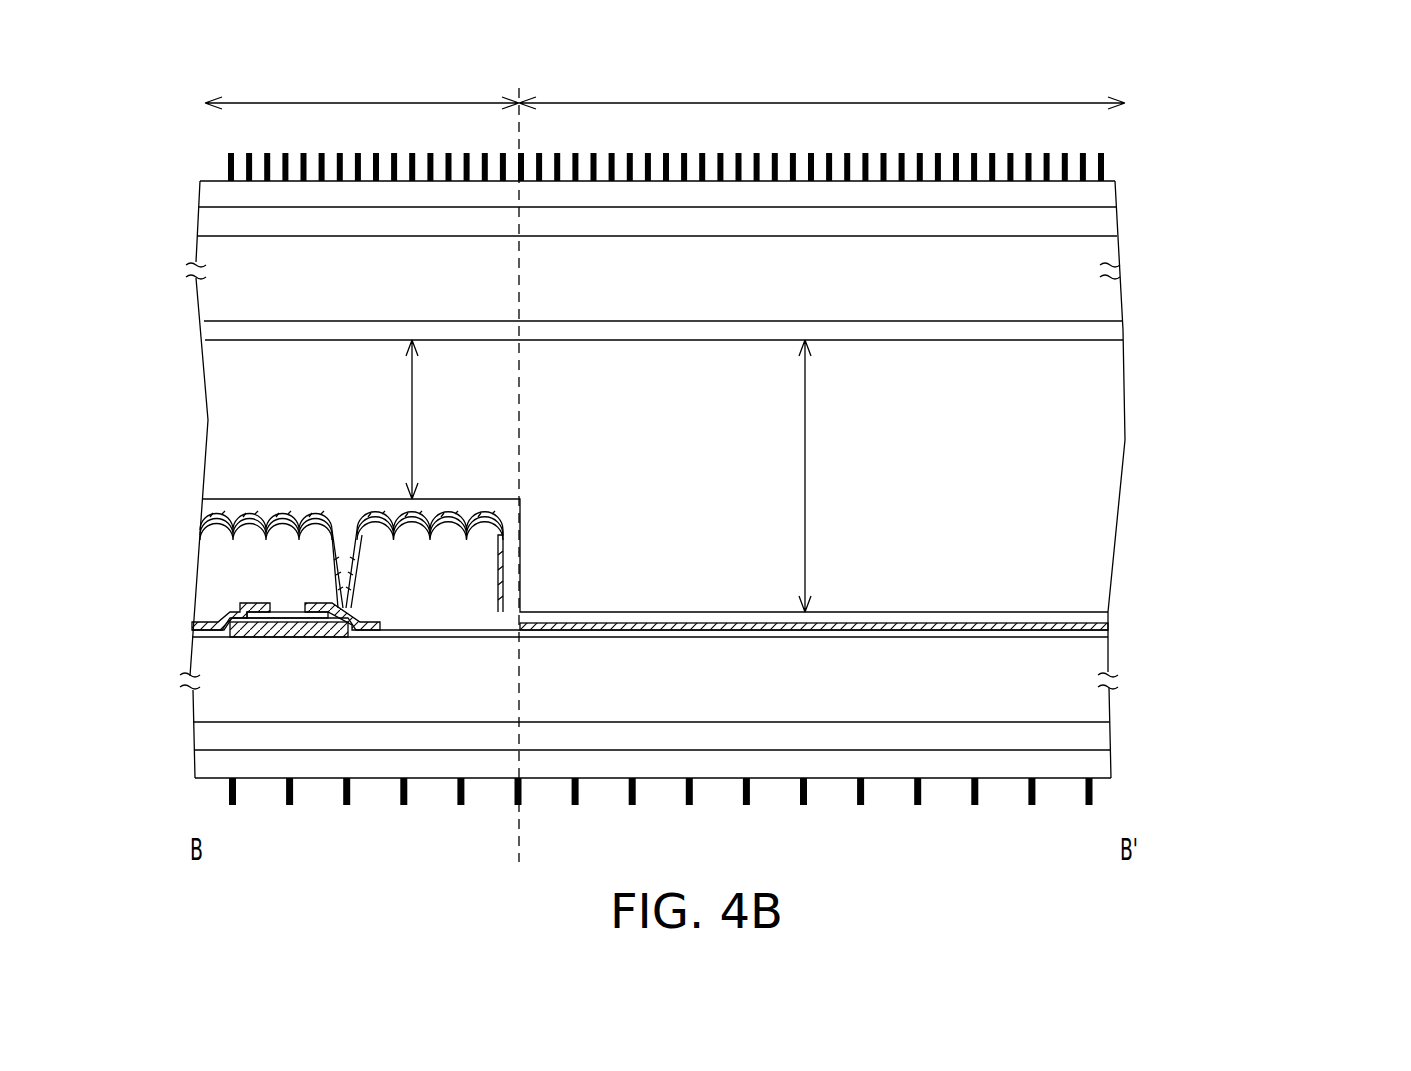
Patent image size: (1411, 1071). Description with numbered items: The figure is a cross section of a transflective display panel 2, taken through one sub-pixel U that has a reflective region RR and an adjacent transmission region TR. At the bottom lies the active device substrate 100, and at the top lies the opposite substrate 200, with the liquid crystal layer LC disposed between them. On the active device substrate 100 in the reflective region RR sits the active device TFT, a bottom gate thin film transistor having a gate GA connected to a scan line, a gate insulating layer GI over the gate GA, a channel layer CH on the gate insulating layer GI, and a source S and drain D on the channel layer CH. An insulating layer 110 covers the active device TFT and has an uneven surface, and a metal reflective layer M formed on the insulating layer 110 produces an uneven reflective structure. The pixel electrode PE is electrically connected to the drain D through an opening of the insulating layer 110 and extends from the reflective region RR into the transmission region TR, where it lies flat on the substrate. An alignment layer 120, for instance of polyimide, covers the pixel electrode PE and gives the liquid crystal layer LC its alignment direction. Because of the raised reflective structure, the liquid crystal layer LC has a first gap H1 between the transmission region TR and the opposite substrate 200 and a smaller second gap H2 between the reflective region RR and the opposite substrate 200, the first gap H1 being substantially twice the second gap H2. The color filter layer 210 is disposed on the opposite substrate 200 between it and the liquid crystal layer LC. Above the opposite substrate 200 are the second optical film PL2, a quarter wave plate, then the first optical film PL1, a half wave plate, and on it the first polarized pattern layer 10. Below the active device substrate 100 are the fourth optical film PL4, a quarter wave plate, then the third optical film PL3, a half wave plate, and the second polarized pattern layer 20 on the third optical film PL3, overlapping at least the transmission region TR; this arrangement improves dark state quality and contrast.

The first polarized pattern layer 10 is at (1107, 162).
The first optical film PL1 is at (1103, 195).
The second optical film PL2 is at (1103, 225).
The opposite substrate 200 is at (1107, 287).
The color filter layer 210 is at (1103, 328).
The liquid crystal layer LC is at (1103, 449).
The alignment layer 120 is at (1060, 615).
The reflective layer M is at (243, 525).
The insulating layer 110 is at (208, 538).
The drain D is at (318, 598).
The channel layer CH is at (292, 613).
The source S is at (218, 613).
The gate insulating layer GI is at (197, 637).
The gate GA is at (287, 632).
The pixel electrode PE is at (1105, 627).
The active device substrate 100 is at (1088, 702).
The fourth optical film PL4 is at (1102, 733).
The third optical film PL3 is at (1102, 763).
The second polarized pattern layer 20 is at (1090, 790).
The first gap H1 is at (787, 476).
The second gap H2 is at (392, 419).
The reflective region RR is at (362, 88).
The transmission region TR is at (822, 88).
The sub-pixel U is at (1305, 118).
The active device TFT is at (1370, 45).
The display panel 2 is at (1352, 834).